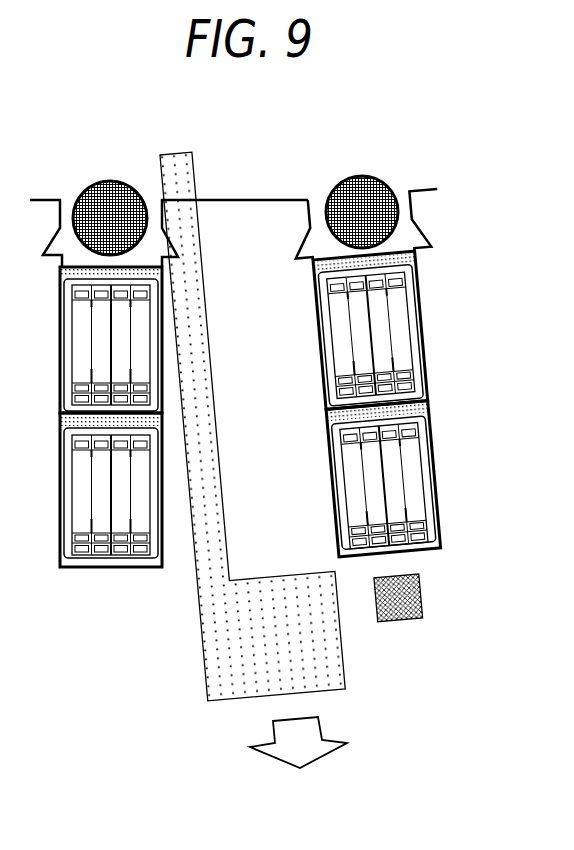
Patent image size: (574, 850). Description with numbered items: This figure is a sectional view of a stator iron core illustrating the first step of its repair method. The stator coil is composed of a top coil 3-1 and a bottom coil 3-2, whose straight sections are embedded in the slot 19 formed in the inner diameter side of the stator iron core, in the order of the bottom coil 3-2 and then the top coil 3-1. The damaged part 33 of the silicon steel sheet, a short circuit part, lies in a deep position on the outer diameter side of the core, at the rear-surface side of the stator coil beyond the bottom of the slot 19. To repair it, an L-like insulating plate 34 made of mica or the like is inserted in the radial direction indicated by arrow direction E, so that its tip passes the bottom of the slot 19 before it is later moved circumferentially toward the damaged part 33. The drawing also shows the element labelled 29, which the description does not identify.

The slot 19 is at (103, 567).
The roller 29 is at (370, 192).
The top coil 3-1 is at (402, 333).
The bottom coil 3-2 is at (417, 488).
The damaged part 33 is at (410, 597).
The L-like insulating plate 34 is at (335, 651).
The arrow direction E is at (308, 750).